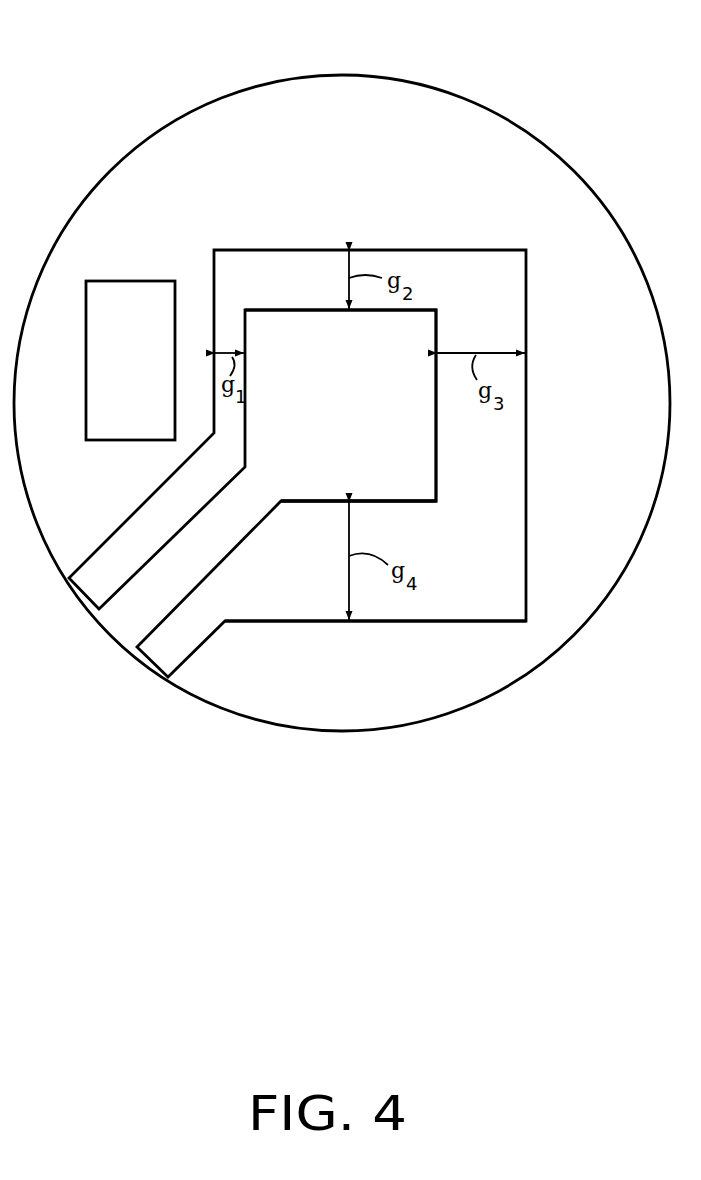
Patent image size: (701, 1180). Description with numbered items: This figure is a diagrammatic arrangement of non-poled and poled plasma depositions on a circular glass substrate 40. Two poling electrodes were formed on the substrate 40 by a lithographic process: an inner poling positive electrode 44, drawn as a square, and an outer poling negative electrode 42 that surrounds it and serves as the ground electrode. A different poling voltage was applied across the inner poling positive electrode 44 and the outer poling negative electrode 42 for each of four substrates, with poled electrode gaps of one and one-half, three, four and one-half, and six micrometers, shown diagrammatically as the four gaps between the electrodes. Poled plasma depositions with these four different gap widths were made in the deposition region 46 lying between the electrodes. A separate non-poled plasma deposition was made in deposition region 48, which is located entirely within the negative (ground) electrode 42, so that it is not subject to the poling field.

The substrate 40 is at (537, 75).
The outer poling negative electrode 42 is at (422, 189).
The inner poling positive electrode 44 is at (398, 448).
The deposition region 46 is at (327, 587).
The deposition region 48 is at (145, 363).